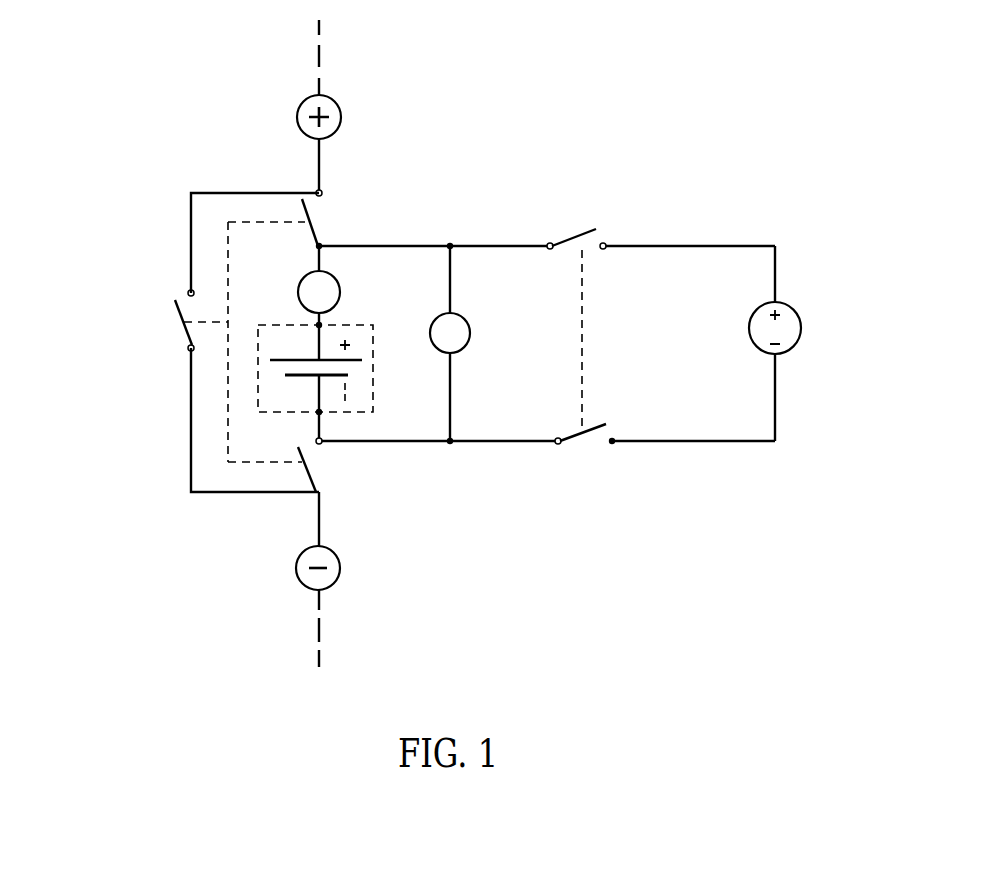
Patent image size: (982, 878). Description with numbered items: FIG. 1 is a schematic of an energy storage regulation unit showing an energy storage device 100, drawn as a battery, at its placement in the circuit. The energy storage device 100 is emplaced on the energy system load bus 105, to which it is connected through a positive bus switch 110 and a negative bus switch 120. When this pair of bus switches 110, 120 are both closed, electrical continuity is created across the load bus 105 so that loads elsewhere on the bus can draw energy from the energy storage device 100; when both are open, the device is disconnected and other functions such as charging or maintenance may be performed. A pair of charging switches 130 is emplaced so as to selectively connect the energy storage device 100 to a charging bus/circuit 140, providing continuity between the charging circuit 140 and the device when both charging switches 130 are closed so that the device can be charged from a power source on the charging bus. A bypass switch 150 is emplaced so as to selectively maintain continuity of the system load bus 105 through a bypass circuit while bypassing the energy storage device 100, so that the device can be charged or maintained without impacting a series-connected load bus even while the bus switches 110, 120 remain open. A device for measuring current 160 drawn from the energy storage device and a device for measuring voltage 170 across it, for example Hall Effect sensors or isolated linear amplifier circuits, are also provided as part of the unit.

The energy storage device 100 is at (364, 392).
The energy system load bus 105 is at (323, 46).
The positive bus switch 110 is at (313, 210).
The negative bus switch 120 is at (310, 467).
The pair of charging switches 130 is at (605, 408).
The charging bus/circuit 140 is at (863, 299).
The bypass switch 150 is at (183, 343).
The device for measuring current 160 is at (328, 278).
The device for measuring voltage 170 is at (460, 353).